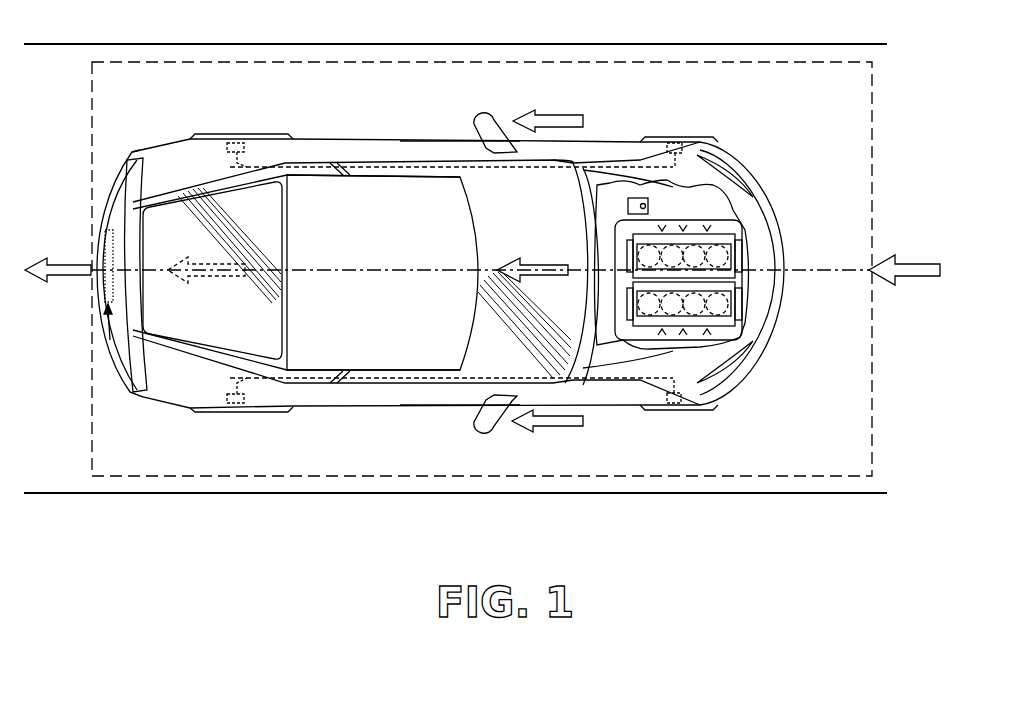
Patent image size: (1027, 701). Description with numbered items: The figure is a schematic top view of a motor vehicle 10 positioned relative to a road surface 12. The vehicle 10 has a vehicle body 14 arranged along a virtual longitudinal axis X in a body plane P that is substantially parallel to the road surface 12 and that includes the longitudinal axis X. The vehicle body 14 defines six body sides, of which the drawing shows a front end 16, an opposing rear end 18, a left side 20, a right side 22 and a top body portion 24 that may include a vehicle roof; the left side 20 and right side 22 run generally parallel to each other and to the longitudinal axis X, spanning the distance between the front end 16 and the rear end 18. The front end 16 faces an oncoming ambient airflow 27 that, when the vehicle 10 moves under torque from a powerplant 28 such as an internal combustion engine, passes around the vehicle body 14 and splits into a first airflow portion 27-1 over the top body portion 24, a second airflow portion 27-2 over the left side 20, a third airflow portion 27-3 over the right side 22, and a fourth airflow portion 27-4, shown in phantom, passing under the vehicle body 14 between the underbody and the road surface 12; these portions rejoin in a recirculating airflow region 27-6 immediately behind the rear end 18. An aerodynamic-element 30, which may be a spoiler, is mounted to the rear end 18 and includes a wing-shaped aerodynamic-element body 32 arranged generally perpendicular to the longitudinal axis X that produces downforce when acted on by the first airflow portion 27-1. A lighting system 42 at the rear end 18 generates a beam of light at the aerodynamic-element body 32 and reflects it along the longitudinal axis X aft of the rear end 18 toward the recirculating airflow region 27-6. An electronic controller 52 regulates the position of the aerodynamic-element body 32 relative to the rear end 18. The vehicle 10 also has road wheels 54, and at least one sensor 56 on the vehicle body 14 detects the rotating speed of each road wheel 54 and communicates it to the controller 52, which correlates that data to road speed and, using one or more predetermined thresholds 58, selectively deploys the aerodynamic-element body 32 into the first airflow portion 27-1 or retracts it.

The motor vehicle 10 is at (794, 409).
The road surface 12 is at (437, 470).
The vehicle body 14 is at (396, 205).
The front end 16 is at (778, 221).
The rear end 18 is at (98, 242).
The left side 20 is at (457, 143).
The right side 22 is at (444, 403).
The top body portion 24 is at (379, 268).
The ambient airflow 27 is at (912, 262).
The first airflow portion 27-1 is at (545, 276).
The second airflow portion 27-2 is at (567, 120).
The third airflow portion 27-3 is at (557, 424).
The fourth airflow portion 27-4 is at (200, 275).
The recirculating airflow region 27-6 is at (68, 274).
The powerplant 28 is at (668, 326).
The aerodynamic-element 30 is at (114, 167).
The aerodynamic-element body 32 is at (134, 400).
The lighting system 42 is at (108, 328).
The electronic controller 52 is at (632, 198).
The road wheels 54 is at (205, 133).
The sensor 56 is at (227, 146).
The predetermined thresholds 58 is at (648, 206).
The body plane P is at (92, 440).
The longitudinal axis X is at (848, 272).